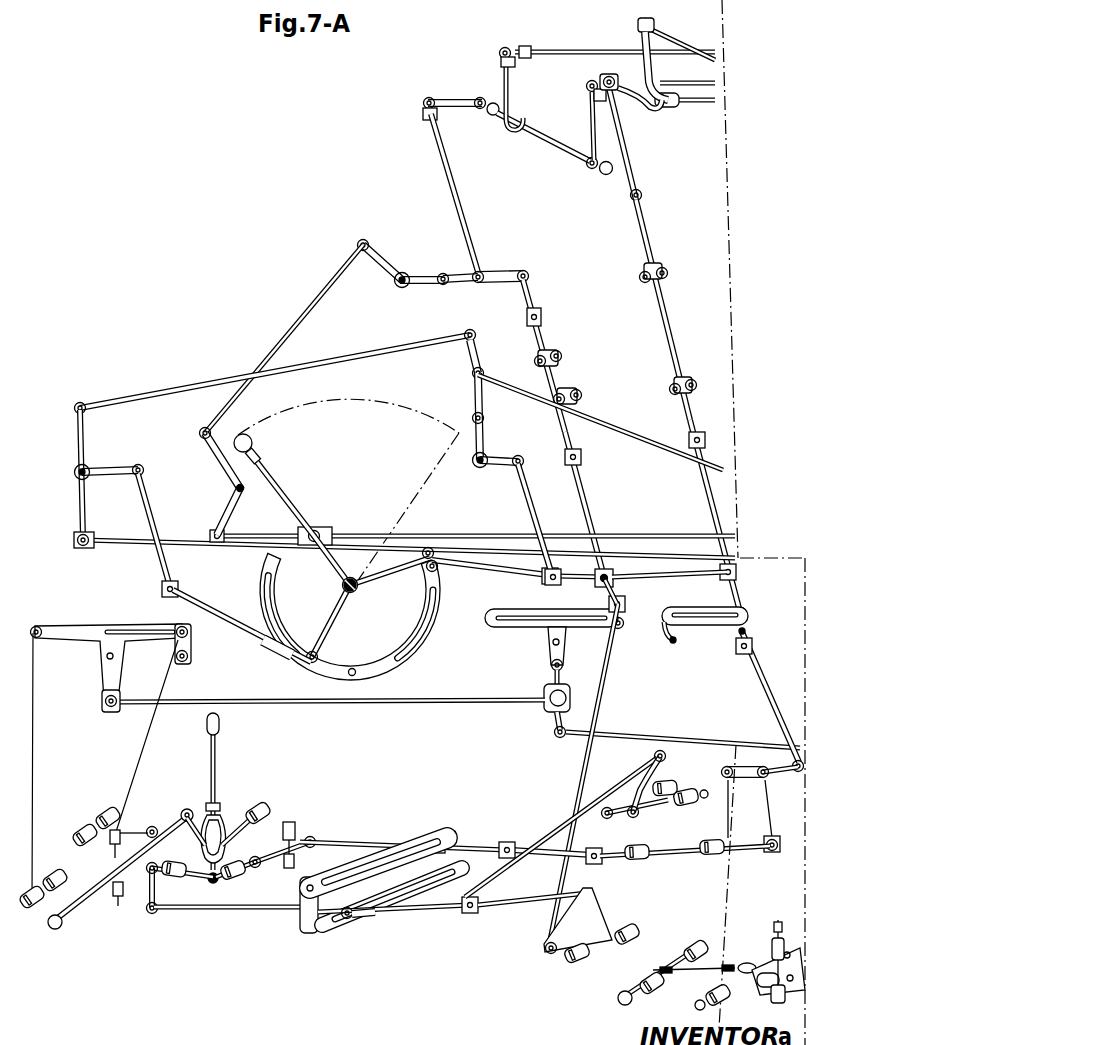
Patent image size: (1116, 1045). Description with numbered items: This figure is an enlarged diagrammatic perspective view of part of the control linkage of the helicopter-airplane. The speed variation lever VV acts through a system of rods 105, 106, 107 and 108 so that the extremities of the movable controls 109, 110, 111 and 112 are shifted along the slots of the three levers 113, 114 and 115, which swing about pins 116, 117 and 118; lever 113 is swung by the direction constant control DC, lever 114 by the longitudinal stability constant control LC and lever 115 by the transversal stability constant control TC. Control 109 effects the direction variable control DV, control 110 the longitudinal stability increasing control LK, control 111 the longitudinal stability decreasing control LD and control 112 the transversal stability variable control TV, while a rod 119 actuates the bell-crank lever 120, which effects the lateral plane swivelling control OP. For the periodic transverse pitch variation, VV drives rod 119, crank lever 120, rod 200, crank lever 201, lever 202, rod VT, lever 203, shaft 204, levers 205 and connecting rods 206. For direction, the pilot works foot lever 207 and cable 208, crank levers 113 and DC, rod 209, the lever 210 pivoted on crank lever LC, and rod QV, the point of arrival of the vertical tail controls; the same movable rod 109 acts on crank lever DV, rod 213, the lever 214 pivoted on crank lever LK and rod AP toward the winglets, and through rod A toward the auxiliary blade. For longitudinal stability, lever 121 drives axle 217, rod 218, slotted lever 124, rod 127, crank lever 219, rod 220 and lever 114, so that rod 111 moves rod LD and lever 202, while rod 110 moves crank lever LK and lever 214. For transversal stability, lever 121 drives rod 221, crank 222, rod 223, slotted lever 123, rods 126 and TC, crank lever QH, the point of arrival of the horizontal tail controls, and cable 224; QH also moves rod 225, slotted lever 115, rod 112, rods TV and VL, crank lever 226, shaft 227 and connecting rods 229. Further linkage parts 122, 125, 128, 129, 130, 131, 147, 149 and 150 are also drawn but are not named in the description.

The rod 200 is at (300, 315).
The crank lever 201 is at (382, 255).
The lever 202 is at (502, 273).
The lever 203 is at (455, 100).
The shaft 204 is at (557, 143).
The levers 205 is at (509, 87).
The connecting rods 206 is at (557, 52).
The foot lever 207 is at (92, 892).
The cable 208 is at (132, 742).
The rod 209 is at (378, 703).
The lever 210 is at (548, 690).
The rod 213 is at (141, 400).
The lever 214 is at (474, 357).
The axle 217 is at (186, 860).
The rod 218 is at (207, 909).
The crank lever 219 is at (567, 950).
The rod 220 is at (590, 750).
The rod 221 is at (229, 867).
The crank 222 is at (272, 848).
The rod 223 is at (427, 838).
The cable 224 is at (733, 905).
The rod 225 is at (762, 680).
The crank lever 226 is at (645, 110).
The shaft 227 is at (692, 102).
The connecting rods 229 is at (664, 43).
The rod 105 is at (230, 620).
The rod 106 is at (478, 567).
The rod 107 is at (584, 591).
The rod 108 is at (655, 598).
The movable rod 109 is at (143, 508).
The movable rod 110 is at (543, 493).
The movable rod 111 is at (590, 507).
The movable rod 112 is at (708, 497).
The lever 113 is at (58, 628).
The lever 114 is at (588, 625).
The lever 115 is at (698, 625).
The pin 116 is at (100, 657).
The pin 117 is at (547, 612).
The pin 118 is at (672, 643).
The rod 119 is at (262, 538).
The bell-crank lever 120 is at (220, 468).
The lever 121 is at (216, 758).
The hanger 122 is at (300, 922).
The slotted lever 123 is at (353, 860).
The slotted lever 124 is at (353, 921).
The slotted link 125 is at (427, 860).
The rod 126 is at (478, 845).
The rod 127 is at (493, 905).
The turnbuckle 128 is at (690, 813).
The lever 129 is at (667, 777).
The rod 130 is at (550, 824).
The link 131 is at (627, 816).
The turnbuckle rod 147 is at (693, 977).
The bracket 149 is at (757, 982).
The pin 150 is at (778, 916).
The point of arrival of the blade control A is at (128, 544).
The point of arrival of the lateral plane winglet controls AP is at (499, 416).
The direction constant control DC is at (113, 674).
The direction variable control DV is at (103, 468).
The longitudinal stability constant control LC is at (548, 652).
The longitudinal stability decreasing control LD is at (543, 330).
The longitudinal stability increasing control LK is at (495, 465).
The point of arrival of the lateral plane swivelling control OP is at (447, 538).
The point of arrival of the horizontal tail controls QH is at (736, 766).
The point of arrival of the vertical tail controls QV is at (627, 735).
The transversal stability constant control TC is at (677, 858).
The transversal stability variable control TV is at (666, 319).
The point of arrival of the control for the longitudinal periodical variation of the VL is at (633, 178).
The point of arrival of the controls for the transversal periodical variation of the VT is at (444, 178).
The speed variation control VV is at (282, 493).